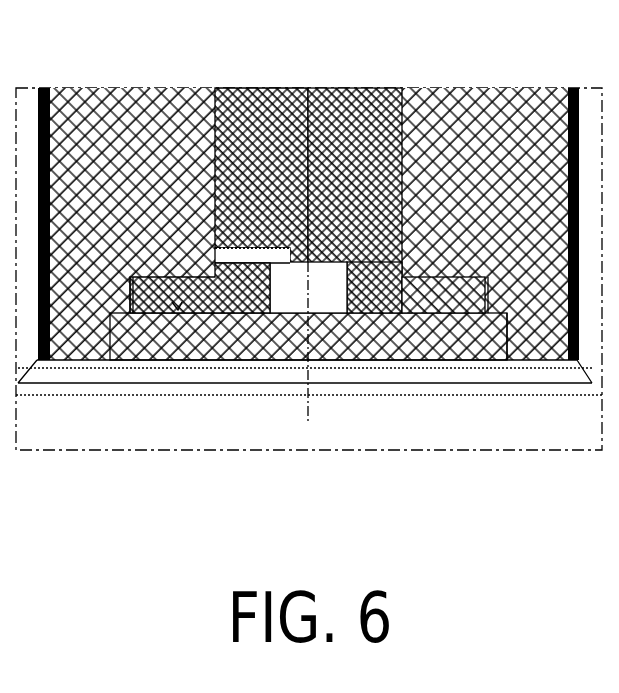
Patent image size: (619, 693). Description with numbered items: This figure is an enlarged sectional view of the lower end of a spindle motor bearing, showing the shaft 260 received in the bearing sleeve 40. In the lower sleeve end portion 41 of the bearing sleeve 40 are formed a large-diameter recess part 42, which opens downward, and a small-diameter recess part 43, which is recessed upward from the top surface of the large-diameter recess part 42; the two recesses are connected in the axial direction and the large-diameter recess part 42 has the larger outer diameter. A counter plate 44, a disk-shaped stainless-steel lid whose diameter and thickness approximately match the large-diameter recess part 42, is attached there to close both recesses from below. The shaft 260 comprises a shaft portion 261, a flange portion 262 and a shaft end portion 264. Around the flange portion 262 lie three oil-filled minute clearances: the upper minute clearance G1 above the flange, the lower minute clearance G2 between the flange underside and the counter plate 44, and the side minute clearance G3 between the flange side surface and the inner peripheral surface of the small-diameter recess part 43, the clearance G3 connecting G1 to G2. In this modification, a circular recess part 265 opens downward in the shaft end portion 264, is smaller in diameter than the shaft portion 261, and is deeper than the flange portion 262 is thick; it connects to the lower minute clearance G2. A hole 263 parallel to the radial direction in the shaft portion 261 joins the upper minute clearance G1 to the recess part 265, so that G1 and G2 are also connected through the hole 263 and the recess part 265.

The bearing sleeve 40 is at (487, 88).
The sleeve end portion 41 is at (540, 320).
The large-diameter recess part 42 is at (508, 325).
The small-diameter recess part 43 is at (485, 275).
The counter plate 44 is at (298, 330).
The shaft 260 is at (270, 88).
The shaft portion 261 is at (355, 88).
The flange portion 262 is at (168, 300).
The hole 263 is at (232, 263).
The shaft end portion 264 is at (375, 268).
The recess part 265 is at (345, 288).
The upper minute clearance G1 is at (190, 277).
The lower minute clearance G2 is at (191, 295).
The side minute clearance G3 is at (128, 295).